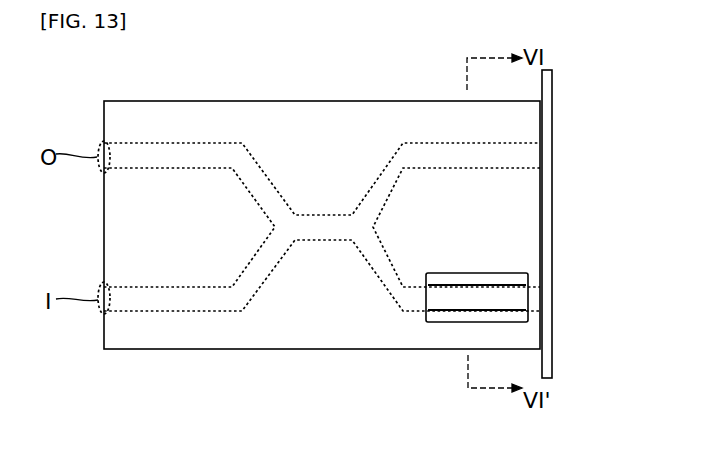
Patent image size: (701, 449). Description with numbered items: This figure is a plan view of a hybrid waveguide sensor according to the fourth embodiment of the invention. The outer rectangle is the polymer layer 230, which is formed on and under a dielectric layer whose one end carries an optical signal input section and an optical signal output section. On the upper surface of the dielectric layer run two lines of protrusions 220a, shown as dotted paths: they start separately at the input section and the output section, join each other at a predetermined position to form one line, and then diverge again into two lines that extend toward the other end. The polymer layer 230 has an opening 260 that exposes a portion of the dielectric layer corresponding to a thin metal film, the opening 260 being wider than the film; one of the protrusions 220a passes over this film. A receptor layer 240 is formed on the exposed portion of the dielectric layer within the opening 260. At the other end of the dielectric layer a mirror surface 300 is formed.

The polymer layer 230 is at (353, 120).
The protrusions 220a is at (425, 140).
The receptor layer 240 is at (427, 299).
The opening 260 is at (437, 318).
The mirror surface 300 is at (548, 226).